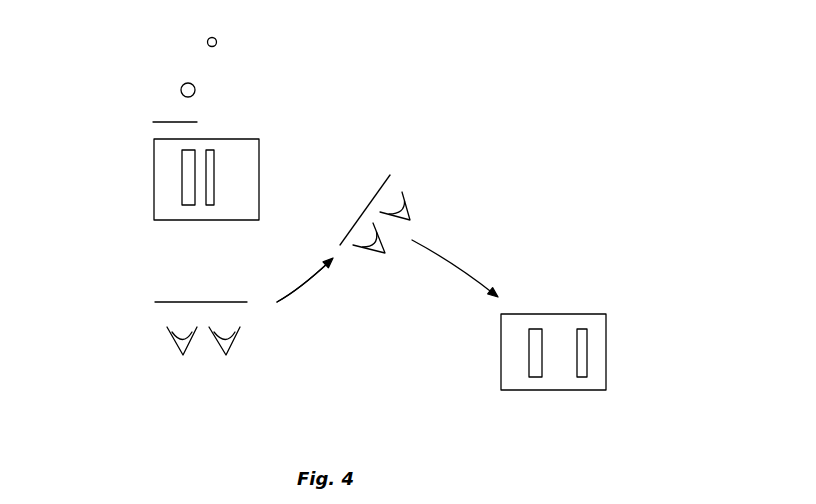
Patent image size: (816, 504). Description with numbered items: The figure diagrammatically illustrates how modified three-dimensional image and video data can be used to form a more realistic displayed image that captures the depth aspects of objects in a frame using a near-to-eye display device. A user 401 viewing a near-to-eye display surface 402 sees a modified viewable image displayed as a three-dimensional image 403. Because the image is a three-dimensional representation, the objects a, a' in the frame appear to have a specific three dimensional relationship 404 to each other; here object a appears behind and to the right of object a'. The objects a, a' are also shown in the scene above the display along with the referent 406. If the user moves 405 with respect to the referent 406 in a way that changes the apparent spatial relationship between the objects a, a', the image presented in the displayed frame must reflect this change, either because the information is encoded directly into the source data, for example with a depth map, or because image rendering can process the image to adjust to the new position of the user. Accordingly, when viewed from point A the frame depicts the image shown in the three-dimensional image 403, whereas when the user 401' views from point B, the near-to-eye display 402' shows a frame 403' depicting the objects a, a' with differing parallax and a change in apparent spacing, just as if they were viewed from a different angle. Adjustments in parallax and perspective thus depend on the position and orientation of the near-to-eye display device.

The user 401 is at (165, 366).
The user 401' is at (430, 217).
The near-to-eye display surface 402 is at (165, 276).
The near-to-eye display 402' is at (383, 172).
The 3D image 403 is at (168, 179).
The frame 403' is at (598, 352).
The three dimensional relationship 404 is at (162, 51).
The user movement 405 is at (313, 283).
The referent 406 is at (178, 117).
The object a is at (403, 203).
The object a' is at (333, 230).
The point A is at (265, 333).
The point B is at (411, 158).